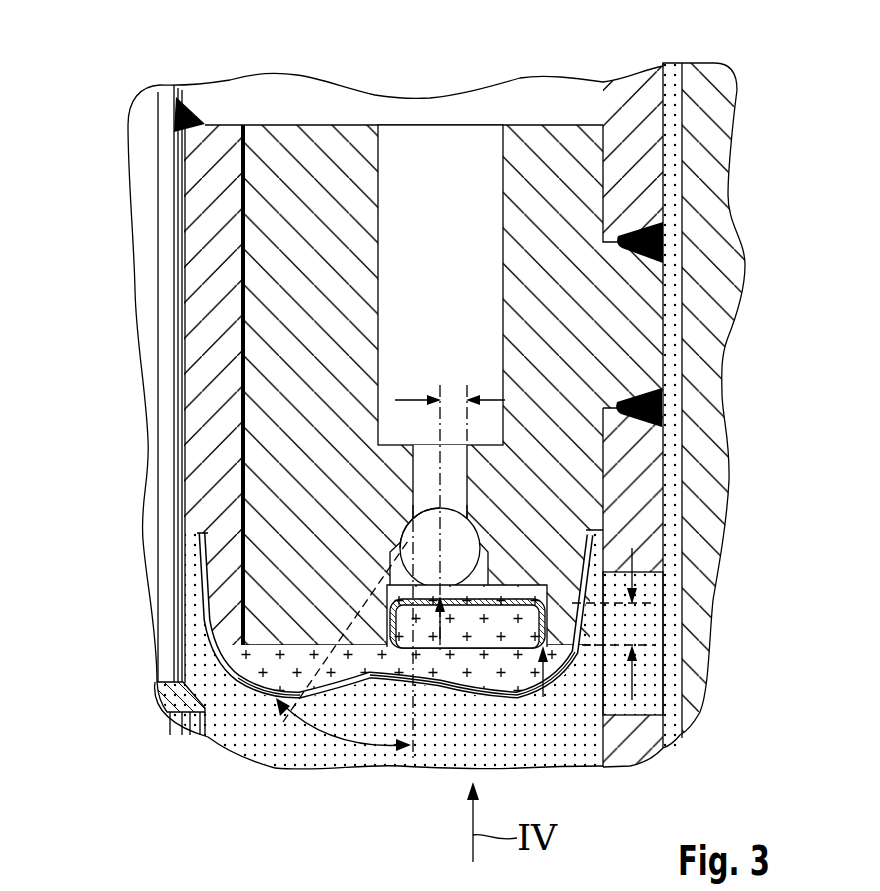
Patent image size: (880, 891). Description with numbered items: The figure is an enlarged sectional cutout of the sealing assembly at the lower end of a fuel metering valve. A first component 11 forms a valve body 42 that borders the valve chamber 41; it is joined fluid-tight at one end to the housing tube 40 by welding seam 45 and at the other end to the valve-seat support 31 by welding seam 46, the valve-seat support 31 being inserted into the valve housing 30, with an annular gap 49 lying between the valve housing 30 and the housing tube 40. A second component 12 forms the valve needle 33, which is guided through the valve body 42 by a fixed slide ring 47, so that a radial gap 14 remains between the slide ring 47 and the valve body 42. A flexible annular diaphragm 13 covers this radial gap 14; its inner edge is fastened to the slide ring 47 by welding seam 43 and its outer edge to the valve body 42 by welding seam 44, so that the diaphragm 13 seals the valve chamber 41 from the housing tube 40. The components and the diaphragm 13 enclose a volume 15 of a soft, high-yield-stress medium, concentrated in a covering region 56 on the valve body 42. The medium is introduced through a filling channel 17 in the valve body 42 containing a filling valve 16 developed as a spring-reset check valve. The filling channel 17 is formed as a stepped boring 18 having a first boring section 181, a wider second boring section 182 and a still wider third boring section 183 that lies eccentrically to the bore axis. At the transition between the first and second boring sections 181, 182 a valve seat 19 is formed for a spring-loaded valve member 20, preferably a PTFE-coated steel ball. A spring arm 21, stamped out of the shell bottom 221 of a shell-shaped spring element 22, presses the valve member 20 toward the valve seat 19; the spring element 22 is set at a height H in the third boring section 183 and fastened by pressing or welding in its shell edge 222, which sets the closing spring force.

The first component 11 is at (581, 168).
The second component 12 is at (167, 357).
The diaphragm 13 is at (210, 735).
The radial gap 14 is at (240, 481).
The volume 15 is at (262, 683).
The filling valve 16 is at (482, 526).
The filling channel 17 is at (433, 140).
The plunger rod 18 is at (468, 460).
The first boring section 181 is at (467, 480).
The second boring section 182 is at (493, 603).
The third boring section 183 is at (547, 602).
The valve seat 19 is at (400, 530).
The valve member 20 is at (428, 550).
The spring arm 21 is at (568, 585).
The spring element 22 is at (543, 700).
The shell bottom 221 is at (418, 688).
The shell edge 222 is at (398, 688).
The valve housing 30 is at (705, 70).
The valve-seat support 31 is at (490, 552).
The valve needle 33 is at (165, 446).
The housing tube 40 is at (630, 83).
The valve chamber 41 is at (505, 757).
The valve body 42 is at (643, 330).
The welding seam 43 is at (214, 585).
The welding seam 44 is at (560, 596).
The welding seam 45 is at (665, 238).
The welding seam 46 is at (665, 400).
The slide ring 47 is at (212, 217).
The annular gap 49 is at (670, 72).
The covering region 56 is at (256, 690).
The height H is at (632, 677).
The eccentricity e is at (450, 517).